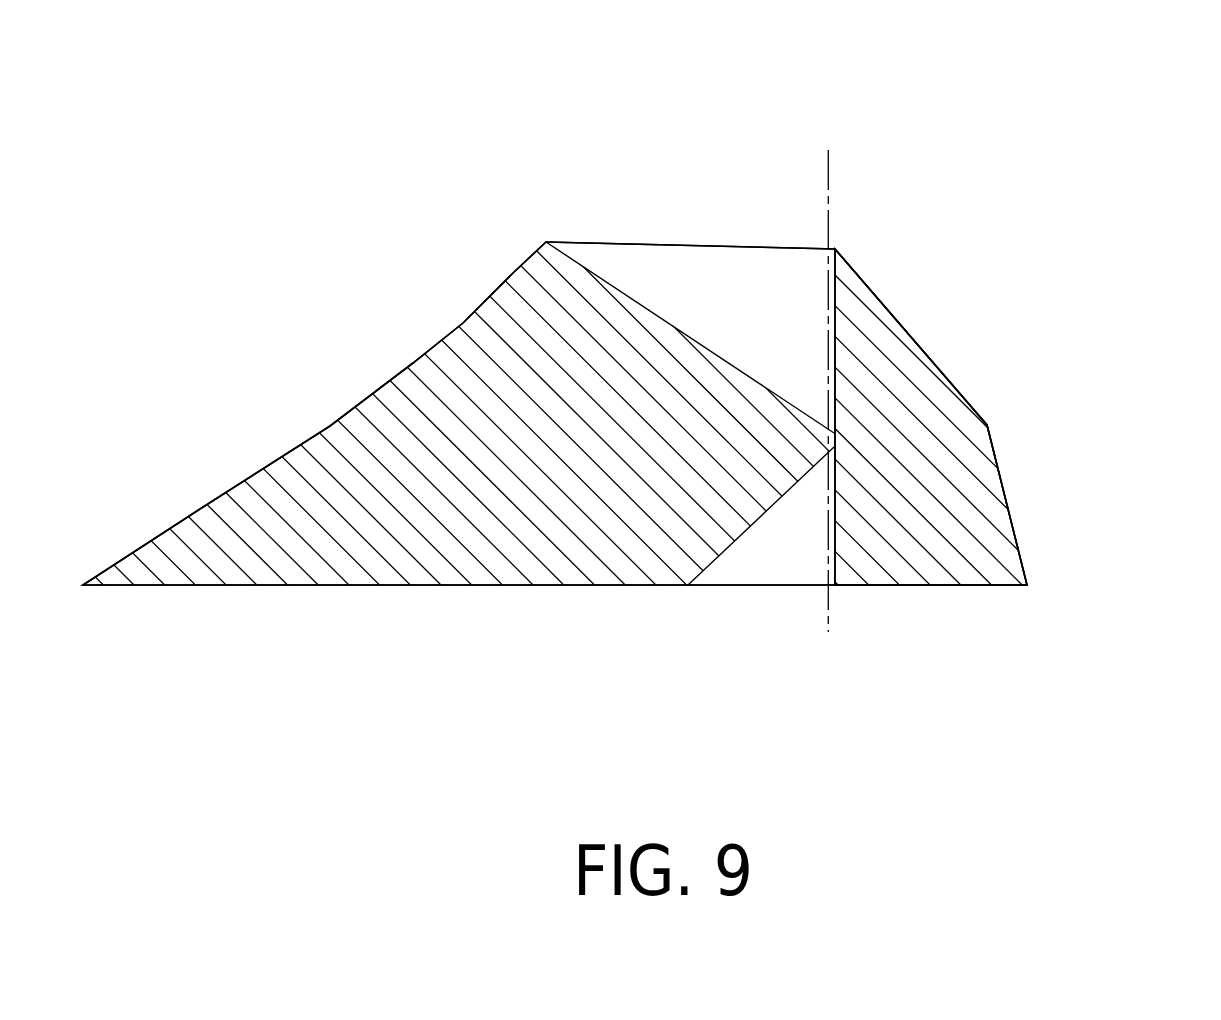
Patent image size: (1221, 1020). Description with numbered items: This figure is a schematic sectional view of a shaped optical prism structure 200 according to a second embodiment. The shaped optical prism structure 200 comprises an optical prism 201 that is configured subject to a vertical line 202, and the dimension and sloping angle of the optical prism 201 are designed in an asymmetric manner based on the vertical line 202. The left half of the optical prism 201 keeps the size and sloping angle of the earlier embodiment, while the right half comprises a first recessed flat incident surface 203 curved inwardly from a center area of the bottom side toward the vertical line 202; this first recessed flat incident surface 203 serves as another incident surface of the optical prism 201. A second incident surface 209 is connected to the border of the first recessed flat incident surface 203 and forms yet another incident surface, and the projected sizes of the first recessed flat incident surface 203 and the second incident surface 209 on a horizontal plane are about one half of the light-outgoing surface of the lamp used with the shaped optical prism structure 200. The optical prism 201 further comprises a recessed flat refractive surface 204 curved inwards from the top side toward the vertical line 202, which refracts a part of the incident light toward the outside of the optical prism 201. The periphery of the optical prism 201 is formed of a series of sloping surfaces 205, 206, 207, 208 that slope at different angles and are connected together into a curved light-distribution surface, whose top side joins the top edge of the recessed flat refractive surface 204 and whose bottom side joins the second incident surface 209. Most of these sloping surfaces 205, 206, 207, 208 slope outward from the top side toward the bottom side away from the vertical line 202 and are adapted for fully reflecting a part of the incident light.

The shaped optical prism structure 200 is at (1164, 97).
The optical prism 201 is at (338, 482).
The vertical line 202 is at (828, 372).
The first recessed flat incident surface 203 is at (828, 515).
The recessed flat refractive surface 204 is at (833, 303).
The sloping surface 205 is at (858, 273).
The sloping surface 206 is at (910, 328).
The sloping surface 207 is at (963, 388).
The sloping surface 208 is at (1010, 513).
The second incident surface 209 is at (900, 587).